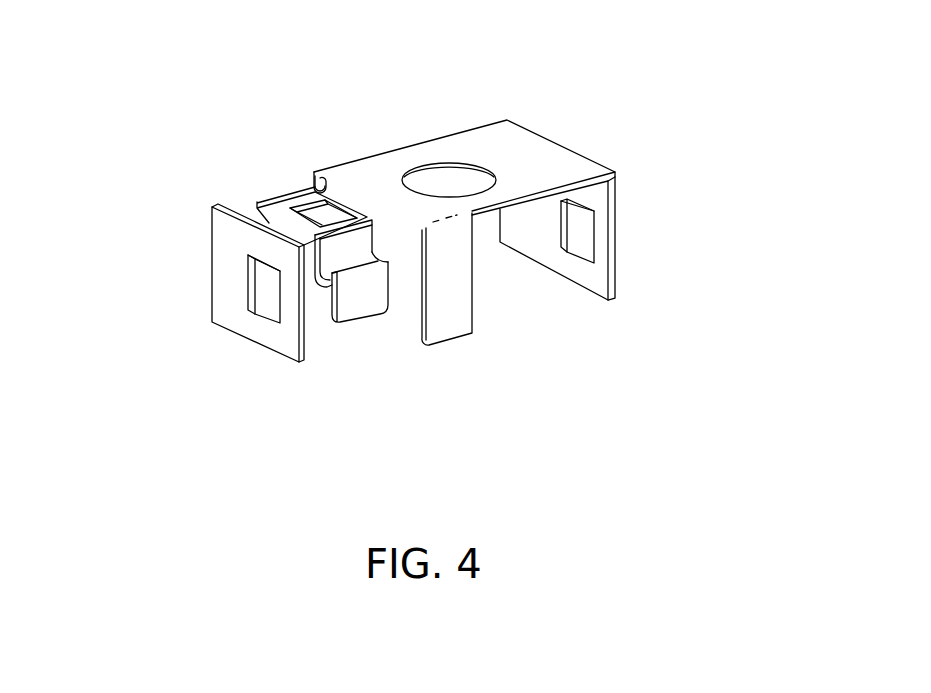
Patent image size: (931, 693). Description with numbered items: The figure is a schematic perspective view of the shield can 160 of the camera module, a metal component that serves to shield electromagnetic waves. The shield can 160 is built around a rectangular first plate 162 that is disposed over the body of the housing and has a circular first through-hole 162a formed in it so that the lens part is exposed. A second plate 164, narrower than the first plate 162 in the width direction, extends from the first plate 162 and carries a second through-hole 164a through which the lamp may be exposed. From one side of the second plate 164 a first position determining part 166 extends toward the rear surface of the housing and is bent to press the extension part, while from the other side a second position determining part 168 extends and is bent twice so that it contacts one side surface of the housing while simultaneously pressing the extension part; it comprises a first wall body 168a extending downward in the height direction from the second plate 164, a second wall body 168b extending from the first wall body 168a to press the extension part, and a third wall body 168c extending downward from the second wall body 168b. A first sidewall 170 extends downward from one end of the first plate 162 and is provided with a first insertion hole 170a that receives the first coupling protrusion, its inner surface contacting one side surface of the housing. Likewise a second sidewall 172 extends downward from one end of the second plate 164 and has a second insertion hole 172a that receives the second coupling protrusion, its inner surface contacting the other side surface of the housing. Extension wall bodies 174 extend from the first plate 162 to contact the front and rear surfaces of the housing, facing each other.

The shield can 160 is at (636, 95).
The first plate 162 is at (429, 147).
The first through-hole 162a is at (462, 182).
The second plate 164 is at (267, 220).
The second through-hole 164a is at (322, 192).
The first position determining part 166 is at (262, 213).
The second position determining part 168 is at (347, 373).
The first wall body 168a is at (326, 252).
The second wall body 168b is at (336, 262).
The third wall body 168c is at (358, 302).
The first sidewall 170 is at (616, 287).
The first insertion hole 170a is at (581, 235).
The second sidewall 172 is at (222, 243).
The second insertion hole 172a is at (262, 293).
The extension wall bodies 174 is at (453, 333).